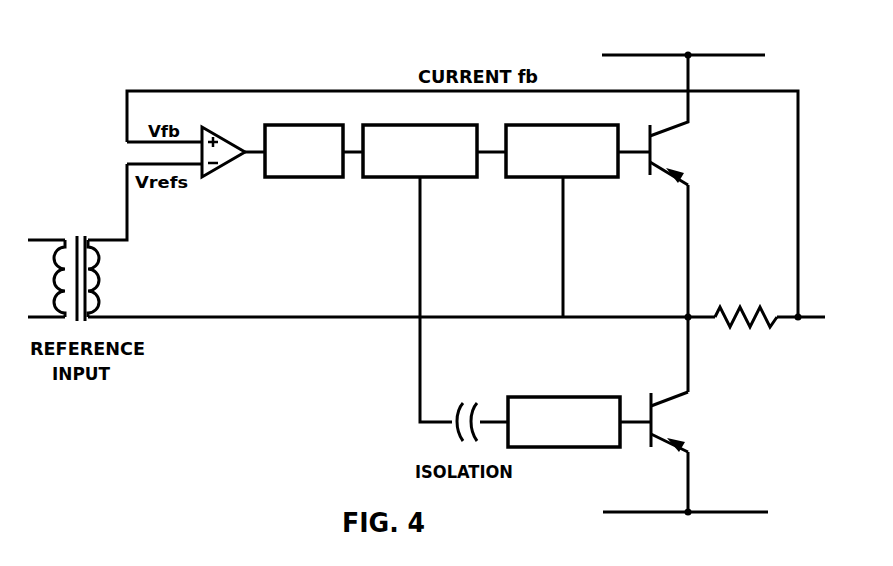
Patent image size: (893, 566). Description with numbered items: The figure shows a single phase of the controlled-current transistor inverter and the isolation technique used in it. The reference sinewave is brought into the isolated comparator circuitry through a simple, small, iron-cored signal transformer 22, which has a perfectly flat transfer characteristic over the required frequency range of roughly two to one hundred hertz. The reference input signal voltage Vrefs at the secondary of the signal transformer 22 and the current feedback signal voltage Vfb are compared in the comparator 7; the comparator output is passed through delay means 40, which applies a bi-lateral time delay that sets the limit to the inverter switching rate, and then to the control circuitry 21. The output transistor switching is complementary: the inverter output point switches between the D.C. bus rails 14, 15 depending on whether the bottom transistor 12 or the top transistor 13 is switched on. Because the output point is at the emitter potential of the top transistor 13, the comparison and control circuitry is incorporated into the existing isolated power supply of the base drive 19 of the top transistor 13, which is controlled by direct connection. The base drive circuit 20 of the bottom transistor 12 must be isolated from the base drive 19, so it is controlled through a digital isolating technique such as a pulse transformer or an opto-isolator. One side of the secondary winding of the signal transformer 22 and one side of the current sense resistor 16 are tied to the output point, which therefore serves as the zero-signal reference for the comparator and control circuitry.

The comparator 7 is at (222, 133).
The delay means 40 is at (308, 125).
The control circuitry 21 is at (440, 125).
The base drive 19 is at (580, 125).
The transistor 13 is at (667, 133).
The D.C. bus rail 15 is at (738, 55).
The current sense resistor 16 is at (745, 306).
The base drive circuit 20 is at (583, 397).
The transistor 12 is at (668, 401).
The D.C. bus rail 14 is at (740, 512).
The signal transformer 22 is at (92, 240).